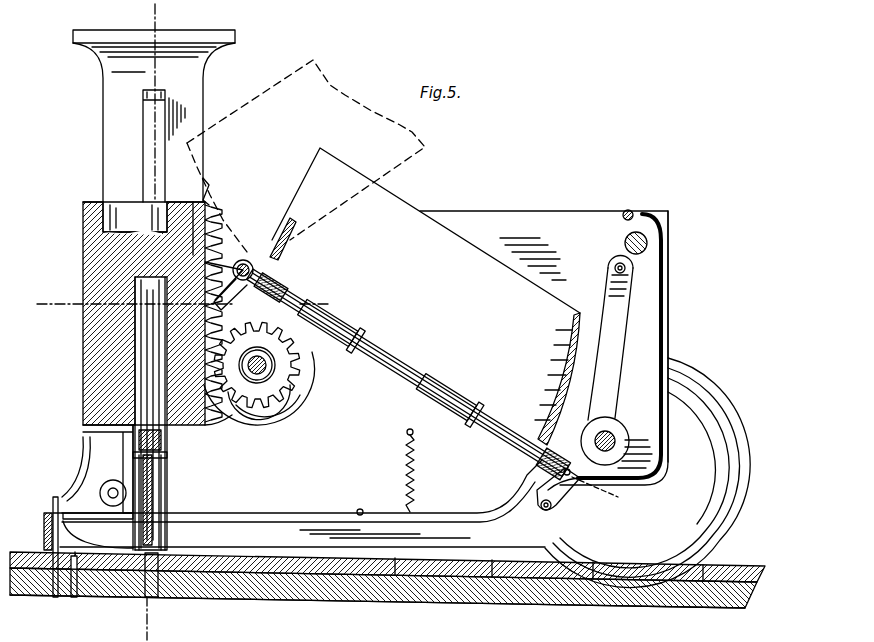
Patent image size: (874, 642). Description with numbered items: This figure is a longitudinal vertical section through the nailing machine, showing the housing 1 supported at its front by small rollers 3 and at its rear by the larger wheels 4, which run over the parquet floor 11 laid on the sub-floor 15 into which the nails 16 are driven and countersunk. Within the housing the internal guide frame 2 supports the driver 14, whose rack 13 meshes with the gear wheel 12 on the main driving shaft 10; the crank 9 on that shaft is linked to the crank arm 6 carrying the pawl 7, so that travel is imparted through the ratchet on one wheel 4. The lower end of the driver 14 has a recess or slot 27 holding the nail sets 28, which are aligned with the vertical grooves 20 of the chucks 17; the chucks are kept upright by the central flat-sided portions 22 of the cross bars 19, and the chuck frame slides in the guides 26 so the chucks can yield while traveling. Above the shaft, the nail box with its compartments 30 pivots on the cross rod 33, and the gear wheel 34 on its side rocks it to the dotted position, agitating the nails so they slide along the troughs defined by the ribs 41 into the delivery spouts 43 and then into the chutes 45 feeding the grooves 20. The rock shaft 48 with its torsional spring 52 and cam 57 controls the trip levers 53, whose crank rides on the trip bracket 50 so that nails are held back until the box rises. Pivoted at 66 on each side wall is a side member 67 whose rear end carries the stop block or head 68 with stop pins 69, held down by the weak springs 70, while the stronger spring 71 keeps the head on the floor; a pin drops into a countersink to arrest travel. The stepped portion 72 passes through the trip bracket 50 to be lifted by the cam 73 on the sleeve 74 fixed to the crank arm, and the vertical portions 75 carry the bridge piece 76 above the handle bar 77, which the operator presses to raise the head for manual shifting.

The housing 1 is at (575, 214).
The internal guide frame 2 is at (209, 196).
The small rollers 3 is at (93, 526).
The rollers or wheels 4 is at (715, 452).
The crank arm 6 is at (168, 20).
The pawl 7 is at (53, 298).
The crank 9 is at (238, 264).
The main driving shaft 10 is at (312, 375).
The parquet floor 11 is at (272, 600).
The gear wheel 12 is at (262, 412).
The rack 13 is at (215, 425).
The driver 14 is at (186, 108).
The sub-floor 15 is at (548, 608).
The nails 16 is at (62, 598).
The chucks 17 is at (168, 492).
The cross bars 19 is at (581, 482).
The vertical grooves 20 is at (210, 492).
The central flat-sided portions 22 is at (153, 472).
The guides 26 is at (168, 457).
The recess or slot 27 is at (123, 440).
The nail sets 28 is at (110, 372).
The compartments 30 is at (425, 296).
The cross rod 33 is at (255, 268).
The gear wheel 34 is at (255, 220).
The ribs 41 is at (512, 440).
The delivery spouts 43 is at (256, 364).
The chutes 45 is at (162, 441).
The rock shaft 48 is at (512, 440).
The trip bracket 50 is at (610, 290).
The torsional spring 52 is at (290, 285).
The trip levers 53 is at (330, 310).
The cam 57 is at (352, 326).
The pivot 66 is at (362, 508).
The side member 67 is at (460, 523).
The stop block or head 68 is at (44, 525).
The stop pins 69 is at (52, 503).
The weak springs 70 is at (60, 495).
The spring 71 is at (420, 472).
The stepped portion 72 is at (540, 512).
The cam 73 is at (612, 425).
The sleeve 74 is at (605, 493).
The vertical portions 75 is at (670, 291).
The bridge piece 76 is at (636, 213).
The handle bar 77 is at (624, 244).